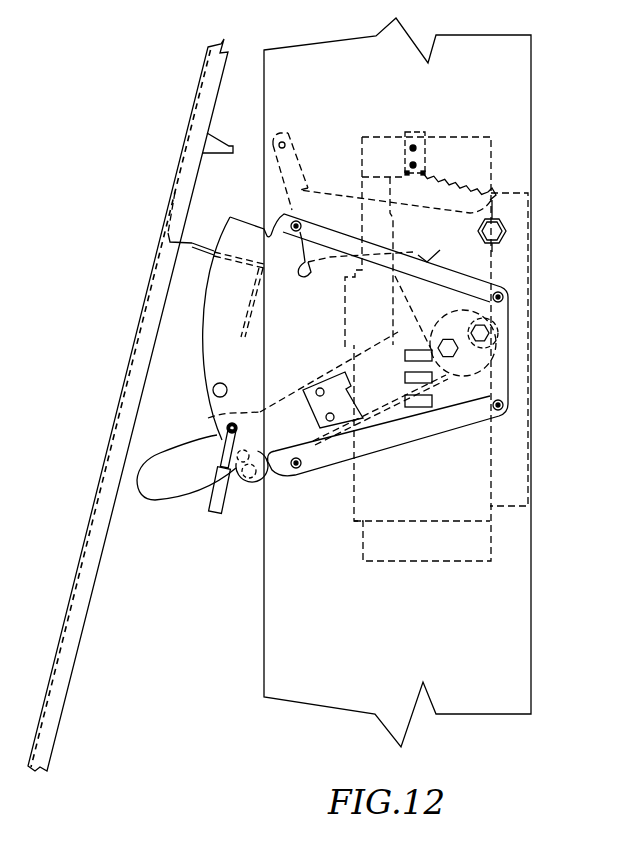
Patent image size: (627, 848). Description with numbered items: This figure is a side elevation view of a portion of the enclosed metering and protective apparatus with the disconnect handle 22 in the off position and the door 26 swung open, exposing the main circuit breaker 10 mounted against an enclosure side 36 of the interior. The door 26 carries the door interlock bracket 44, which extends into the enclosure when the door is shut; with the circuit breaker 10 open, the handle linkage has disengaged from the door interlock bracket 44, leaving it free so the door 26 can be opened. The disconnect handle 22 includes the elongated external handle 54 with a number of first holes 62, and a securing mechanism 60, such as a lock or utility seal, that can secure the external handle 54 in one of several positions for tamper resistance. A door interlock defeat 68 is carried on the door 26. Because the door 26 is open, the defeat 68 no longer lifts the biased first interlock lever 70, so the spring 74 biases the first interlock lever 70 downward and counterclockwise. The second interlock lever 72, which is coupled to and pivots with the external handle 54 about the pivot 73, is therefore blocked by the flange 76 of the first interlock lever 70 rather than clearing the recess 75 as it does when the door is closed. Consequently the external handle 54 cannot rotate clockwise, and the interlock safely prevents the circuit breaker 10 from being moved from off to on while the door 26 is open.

The main circuit breaker 10 is at (400, 562).
The disconnect handle 22 is at (249, 518).
The door 26 is at (66, 614).
The side 36 is at (531, 614).
The door interlock bracket 44 is at (194, 243).
The external handle 54 is at (167, 487).
The securing mechanism 60 is at (216, 512).
The first holes 62 is at (208, 418).
The door interlock defeat 68 is at (213, 134).
The first interlock lever 70 is at (326, 270).
The second interlock lever 72 is at (356, 344).
The pivot 73 is at (508, 363).
The spring 74 is at (486, 182).
The recess 75 is at (456, 248).
The flange 76 is at (418, 255).